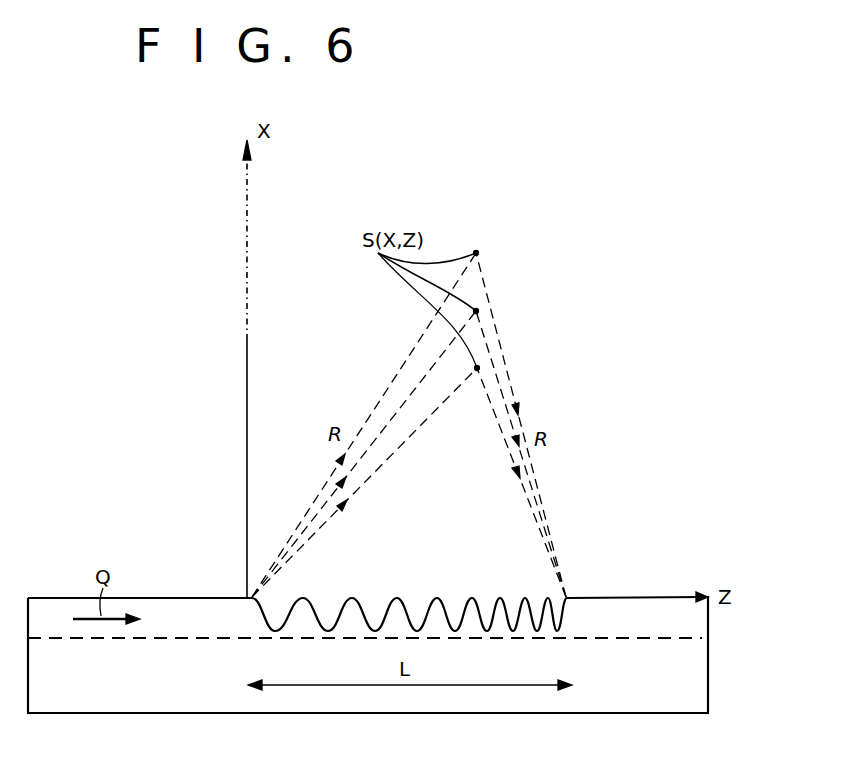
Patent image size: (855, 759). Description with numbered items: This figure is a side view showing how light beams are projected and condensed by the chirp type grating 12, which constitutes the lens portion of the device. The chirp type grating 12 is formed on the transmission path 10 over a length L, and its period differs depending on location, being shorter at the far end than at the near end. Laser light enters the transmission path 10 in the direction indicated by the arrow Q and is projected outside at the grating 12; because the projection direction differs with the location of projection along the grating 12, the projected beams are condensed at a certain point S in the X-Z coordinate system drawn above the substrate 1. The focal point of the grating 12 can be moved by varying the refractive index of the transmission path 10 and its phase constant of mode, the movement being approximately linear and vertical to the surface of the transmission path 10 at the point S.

The substrate 1 is at (700, 680).
The transmission path 10 is at (700, 628).
The chirp type grating 12 is at (406, 601).